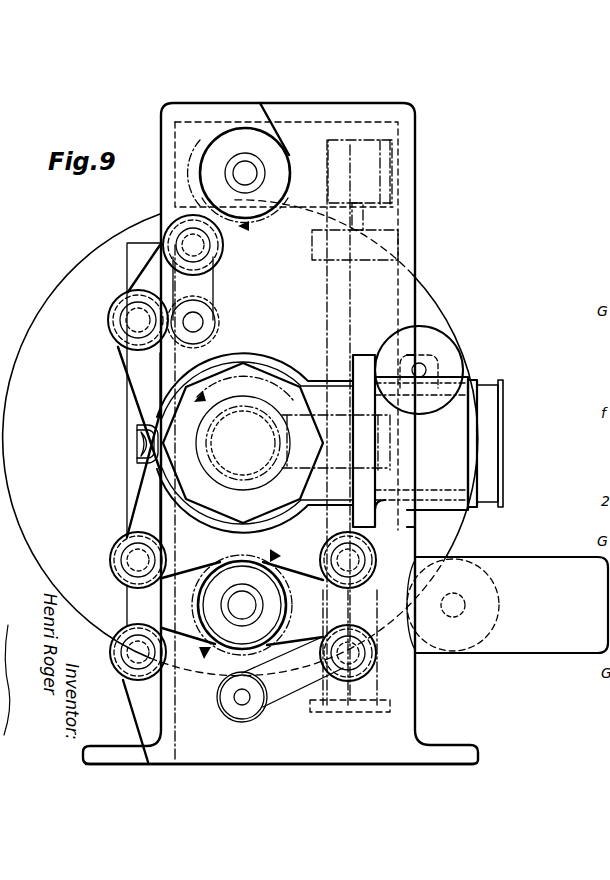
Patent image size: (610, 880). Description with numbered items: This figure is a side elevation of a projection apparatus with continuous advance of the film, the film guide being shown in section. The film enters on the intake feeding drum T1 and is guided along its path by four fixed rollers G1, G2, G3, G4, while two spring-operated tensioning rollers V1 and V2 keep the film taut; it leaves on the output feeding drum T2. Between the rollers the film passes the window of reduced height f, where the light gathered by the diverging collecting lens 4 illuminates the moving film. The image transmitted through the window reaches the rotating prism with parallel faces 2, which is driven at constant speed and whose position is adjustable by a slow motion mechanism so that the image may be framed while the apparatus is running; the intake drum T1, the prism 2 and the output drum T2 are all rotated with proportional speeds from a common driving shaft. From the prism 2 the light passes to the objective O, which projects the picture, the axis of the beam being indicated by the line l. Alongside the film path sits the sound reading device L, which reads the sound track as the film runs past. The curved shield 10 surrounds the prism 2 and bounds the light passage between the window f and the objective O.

The intake feeding drum T1 is at (220, 170).
The spring-operated tensioning roller V1 is at (177, 230).
The fixed roller G1 is at (118, 321).
The fixed roller G2 is at (112, 558).
The fixed roller G3 is at (377, 557).
The fixed roller G4 is at (112, 655).
The spring-operated tensioning roller V2 is at (367, 664).
The output feeding drum T2 is at (242, 604).
The rotating prism with parallel faces 2 is at (243, 443).
The light shield 10 is at (258, 322).
The window of reduced height f is at (143, 440).
The diverging collecting lens 4 is at (138, 453).
The objective O is at (452, 433).
The sound reading device L is at (507, 605).
The light ray axis l is at (350, 297).